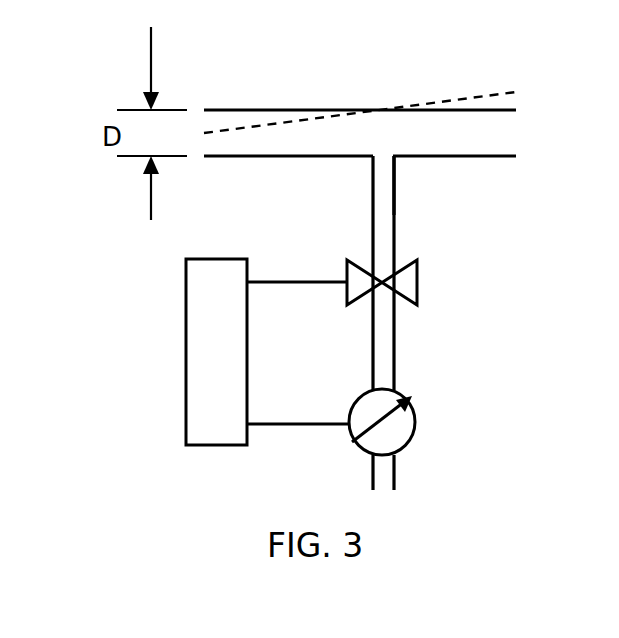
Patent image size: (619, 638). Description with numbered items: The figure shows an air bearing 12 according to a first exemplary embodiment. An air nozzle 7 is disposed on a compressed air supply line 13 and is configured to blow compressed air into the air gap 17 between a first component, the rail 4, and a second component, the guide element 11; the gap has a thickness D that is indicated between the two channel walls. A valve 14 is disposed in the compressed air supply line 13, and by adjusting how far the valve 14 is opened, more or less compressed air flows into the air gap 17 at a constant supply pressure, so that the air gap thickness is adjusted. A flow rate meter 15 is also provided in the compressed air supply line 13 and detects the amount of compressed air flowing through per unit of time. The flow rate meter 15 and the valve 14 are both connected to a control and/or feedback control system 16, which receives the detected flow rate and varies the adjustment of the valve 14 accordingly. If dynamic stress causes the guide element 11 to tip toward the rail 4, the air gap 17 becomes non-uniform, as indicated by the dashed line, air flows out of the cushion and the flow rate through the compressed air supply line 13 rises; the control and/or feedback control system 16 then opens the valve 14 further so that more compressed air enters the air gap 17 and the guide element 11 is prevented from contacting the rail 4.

The rail 4 is at (480, 175).
The air nozzle 7 is at (387, 162).
The guide element 11 is at (360, 96).
The air bearing 12 is at (137, 252).
The compressed air supply line 13 is at (372, 212).
The valve 14 is at (408, 283).
The flow rate meter 15 is at (393, 423).
The control and/or feedback control system 16 is at (203, 342).
The air gap 17 is at (382, 128).